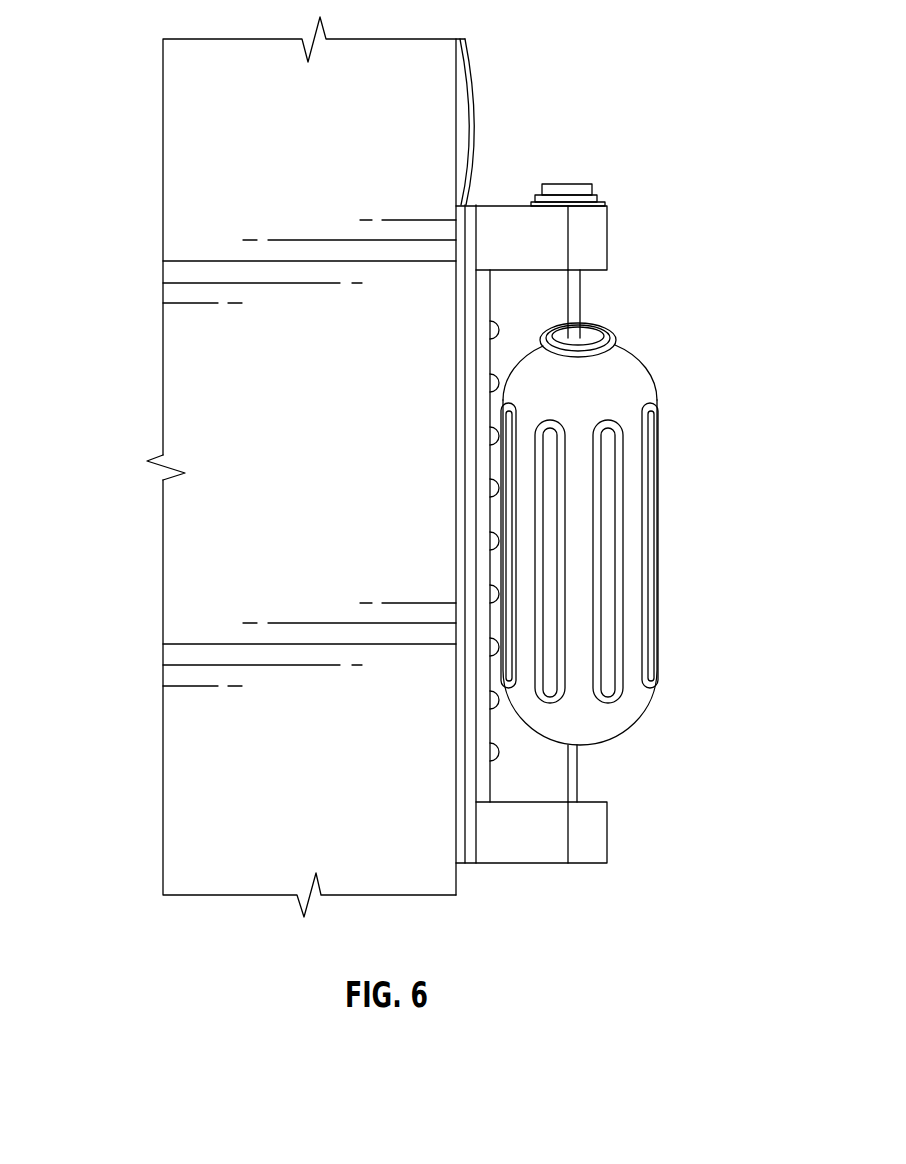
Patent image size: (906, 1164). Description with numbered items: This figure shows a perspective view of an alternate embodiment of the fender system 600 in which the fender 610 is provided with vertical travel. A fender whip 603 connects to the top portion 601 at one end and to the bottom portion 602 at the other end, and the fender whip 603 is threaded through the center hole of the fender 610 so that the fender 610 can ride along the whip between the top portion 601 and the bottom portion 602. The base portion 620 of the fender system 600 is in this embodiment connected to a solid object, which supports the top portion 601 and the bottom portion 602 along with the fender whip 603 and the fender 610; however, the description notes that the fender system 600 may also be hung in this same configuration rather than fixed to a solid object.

The fender system 600 is at (132, 140).
The top portion 601 is at (585, 160).
The bottom portion 602 is at (569, 877).
The fender whip 603 is at (592, 290).
The fender 610 is at (678, 545).
The base portion 620 is at (450, 495).